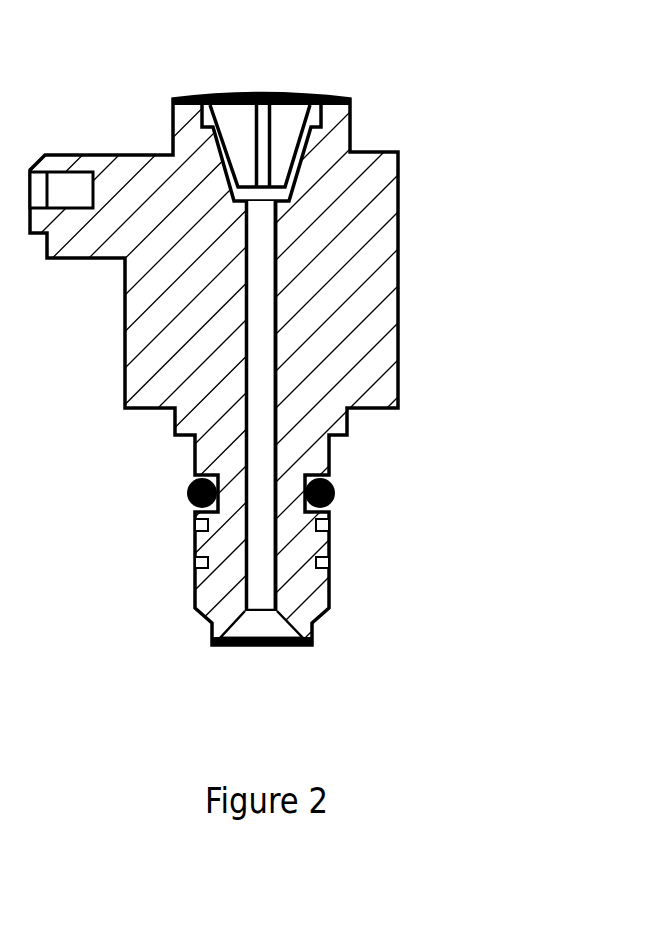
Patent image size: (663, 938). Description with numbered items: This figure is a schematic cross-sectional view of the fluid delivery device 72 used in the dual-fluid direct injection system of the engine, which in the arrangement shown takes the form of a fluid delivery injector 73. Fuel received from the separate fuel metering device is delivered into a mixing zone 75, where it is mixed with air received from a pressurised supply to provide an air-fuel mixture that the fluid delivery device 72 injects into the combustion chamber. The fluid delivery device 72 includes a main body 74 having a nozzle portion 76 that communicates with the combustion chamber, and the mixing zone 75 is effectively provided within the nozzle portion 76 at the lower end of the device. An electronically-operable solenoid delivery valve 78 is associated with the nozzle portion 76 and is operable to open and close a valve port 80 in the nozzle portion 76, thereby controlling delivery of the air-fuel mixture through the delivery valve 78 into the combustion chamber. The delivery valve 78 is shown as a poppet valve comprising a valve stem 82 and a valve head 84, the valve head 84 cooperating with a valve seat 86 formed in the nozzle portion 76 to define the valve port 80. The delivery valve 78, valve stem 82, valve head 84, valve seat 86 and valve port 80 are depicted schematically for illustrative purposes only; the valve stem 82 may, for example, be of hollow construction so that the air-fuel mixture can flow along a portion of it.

The fluid delivery device 72 is at (129, 128).
The fluid delivery injector 73 is at (124, 331).
The main body 74 is at (370, 360).
The mixing zone 75 is at (246, 370).
The nozzle portion 76 is at (330, 548).
The delivery valve 78 is at (267, 575).
The valve port 80 is at (235, 646).
The valve stem 82 is at (278, 445).
The valve head 84 is at (268, 625).
The valve seat 86 is at (233, 625).